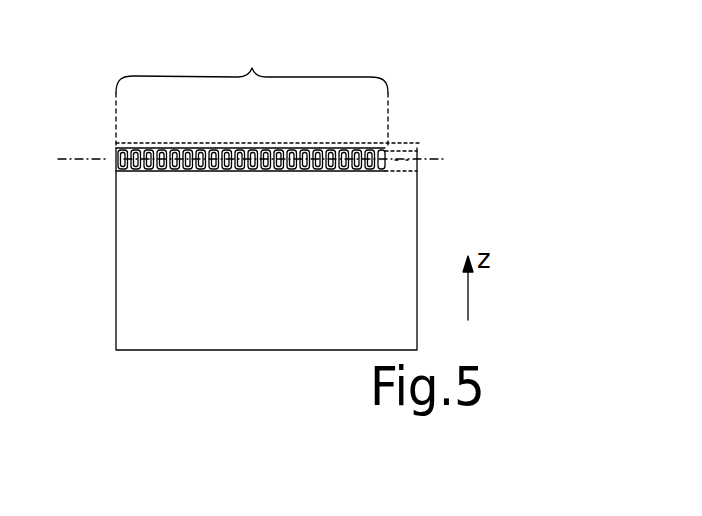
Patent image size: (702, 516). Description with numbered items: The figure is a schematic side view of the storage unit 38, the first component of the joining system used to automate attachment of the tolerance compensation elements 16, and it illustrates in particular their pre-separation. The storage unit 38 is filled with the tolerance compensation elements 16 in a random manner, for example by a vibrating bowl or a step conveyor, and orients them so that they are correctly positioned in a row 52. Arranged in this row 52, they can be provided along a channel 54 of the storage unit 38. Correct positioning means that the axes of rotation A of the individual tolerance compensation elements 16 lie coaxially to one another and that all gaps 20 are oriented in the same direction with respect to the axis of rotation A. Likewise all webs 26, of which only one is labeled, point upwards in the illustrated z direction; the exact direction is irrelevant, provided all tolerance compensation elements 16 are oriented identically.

The tolerance compensation element 16 is at (303, 168).
The gap 20 is at (313, 170).
The web 26 is at (312, 146).
The storage unit 38 is at (308, 72).
The row 52 is at (252, 91).
The channel 54 is at (419, 163).
The axis of rotation A is at (58, 158).